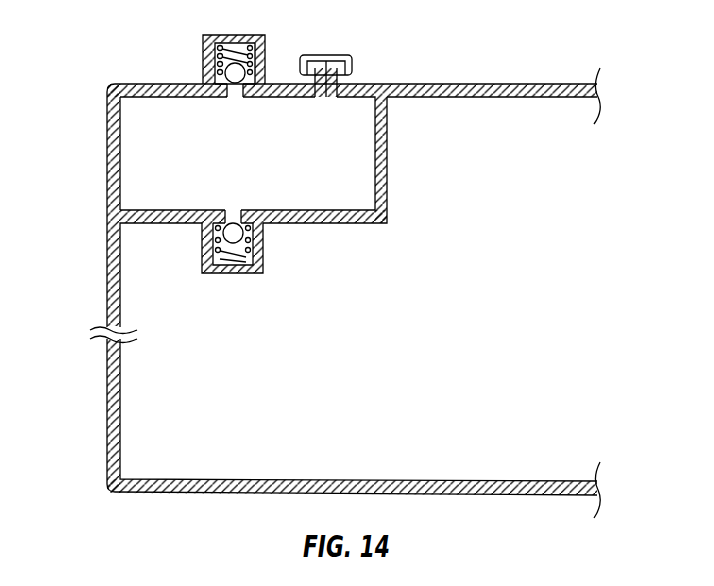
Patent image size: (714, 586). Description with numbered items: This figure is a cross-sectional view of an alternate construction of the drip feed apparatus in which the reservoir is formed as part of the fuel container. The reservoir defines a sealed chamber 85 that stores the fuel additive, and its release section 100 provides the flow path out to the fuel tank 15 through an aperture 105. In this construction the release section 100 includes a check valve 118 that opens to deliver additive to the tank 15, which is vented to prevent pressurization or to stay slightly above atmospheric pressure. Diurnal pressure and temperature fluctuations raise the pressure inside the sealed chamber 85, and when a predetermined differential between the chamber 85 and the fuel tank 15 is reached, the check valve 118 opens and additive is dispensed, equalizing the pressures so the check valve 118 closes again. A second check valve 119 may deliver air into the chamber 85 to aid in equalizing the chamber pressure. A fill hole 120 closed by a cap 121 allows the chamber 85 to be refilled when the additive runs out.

The fuel tank 15 is at (490, 98).
The chamber 85 is at (189, 170).
The release section 100 is at (178, 252).
The aperture 105 is at (233, 213).
The check valve 118 is at (234, 270).
The second check valve 119 is at (234, 46).
The fill hole 120 is at (325, 97).
The cap 121 is at (326, 55).